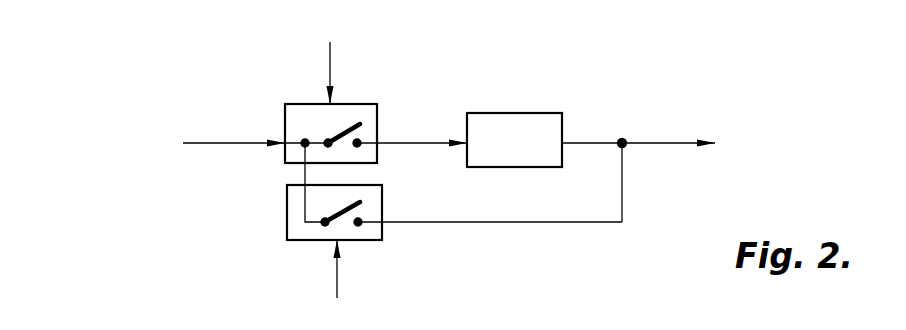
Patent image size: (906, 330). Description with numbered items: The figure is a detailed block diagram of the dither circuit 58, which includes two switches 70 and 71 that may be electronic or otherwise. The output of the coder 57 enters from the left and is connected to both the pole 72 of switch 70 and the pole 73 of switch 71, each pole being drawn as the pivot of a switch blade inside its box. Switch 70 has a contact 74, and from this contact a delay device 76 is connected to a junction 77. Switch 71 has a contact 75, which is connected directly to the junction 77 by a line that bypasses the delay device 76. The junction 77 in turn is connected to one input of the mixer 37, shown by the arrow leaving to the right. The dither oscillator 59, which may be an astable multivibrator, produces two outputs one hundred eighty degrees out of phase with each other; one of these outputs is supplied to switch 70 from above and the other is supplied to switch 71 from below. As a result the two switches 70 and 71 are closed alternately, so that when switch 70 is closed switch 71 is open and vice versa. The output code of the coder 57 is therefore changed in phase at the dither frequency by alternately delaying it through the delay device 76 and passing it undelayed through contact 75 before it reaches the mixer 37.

The coder 57 is at (152, 146).
The dither oscillator 59 is at (376, 154).
The mixer 37 is at (743, 142).
The dither circuit 58 is at (268, 235).
The switch 70 is at (362, 101).
The switch 71 is at (287, 201).
The pole 72 is at (338, 131).
The pole 73 is at (350, 206).
The contact 74 is at (358, 147).
The contact 75 is at (359, 226).
The delay device 76 is at (522, 113).
The junction 77 is at (624, 139).